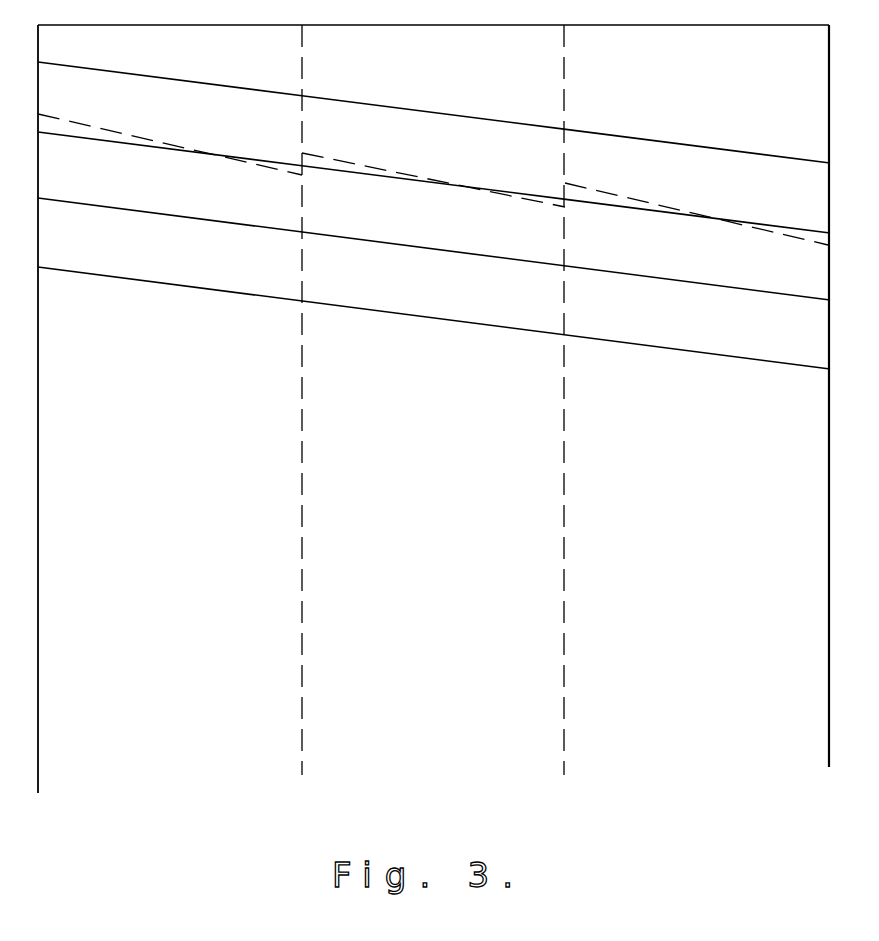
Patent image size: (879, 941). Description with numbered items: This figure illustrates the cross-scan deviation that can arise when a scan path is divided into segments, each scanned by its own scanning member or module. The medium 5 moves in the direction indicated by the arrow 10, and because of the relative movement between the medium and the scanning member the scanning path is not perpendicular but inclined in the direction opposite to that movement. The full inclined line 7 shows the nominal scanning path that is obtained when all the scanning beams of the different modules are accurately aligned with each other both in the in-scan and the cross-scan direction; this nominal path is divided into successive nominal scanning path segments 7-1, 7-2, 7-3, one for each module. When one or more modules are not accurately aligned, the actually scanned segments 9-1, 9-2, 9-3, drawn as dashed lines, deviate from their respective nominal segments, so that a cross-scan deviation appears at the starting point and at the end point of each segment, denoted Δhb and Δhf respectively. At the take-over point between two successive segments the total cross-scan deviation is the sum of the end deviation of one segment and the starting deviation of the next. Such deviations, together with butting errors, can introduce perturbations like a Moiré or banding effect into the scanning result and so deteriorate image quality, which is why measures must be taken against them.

The magnetic tape 5 is at (183, 466).
The nominal scanning path 7 is at (512, 262).
The nominal scanning path segment 7-1 is at (159, 77).
The nominal scanning path segment 7-2 is at (412, 108).
The nominal scanning path segment 7-3 is at (660, 140).
The actually scanned segment 9-1 is at (87, 130).
The actually scanned segment 9-2 is at (493, 192).
The actually scanned segment 9-3 is at (757, 232).
The arrow indicating movement of the medium 10 is at (433, 672).